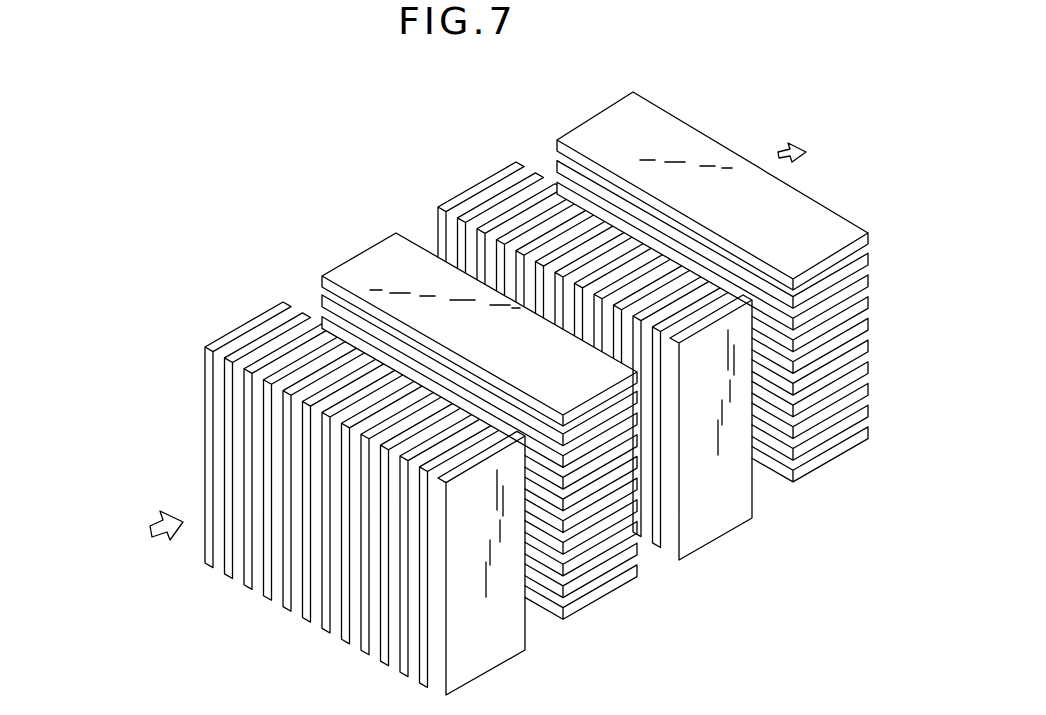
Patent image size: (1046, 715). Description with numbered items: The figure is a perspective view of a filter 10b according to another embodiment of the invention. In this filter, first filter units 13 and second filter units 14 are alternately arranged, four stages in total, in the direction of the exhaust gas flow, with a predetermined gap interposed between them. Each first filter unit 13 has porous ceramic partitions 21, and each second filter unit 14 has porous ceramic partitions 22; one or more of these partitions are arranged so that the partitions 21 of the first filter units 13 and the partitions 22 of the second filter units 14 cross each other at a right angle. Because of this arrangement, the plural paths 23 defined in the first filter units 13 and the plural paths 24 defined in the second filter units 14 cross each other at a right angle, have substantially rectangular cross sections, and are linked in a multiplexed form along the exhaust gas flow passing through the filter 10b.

The filter 10b is at (517, 386).
The first filter unit 13 is at (462, 409).
The second filter unit 14 is at (350, 248).
The porous ceramic partition 21 is at (508, 663).
The porous ceramic partition 22 is at (603, 415).
The path 23 is at (325, 593).
The path 24 is at (550, 598).